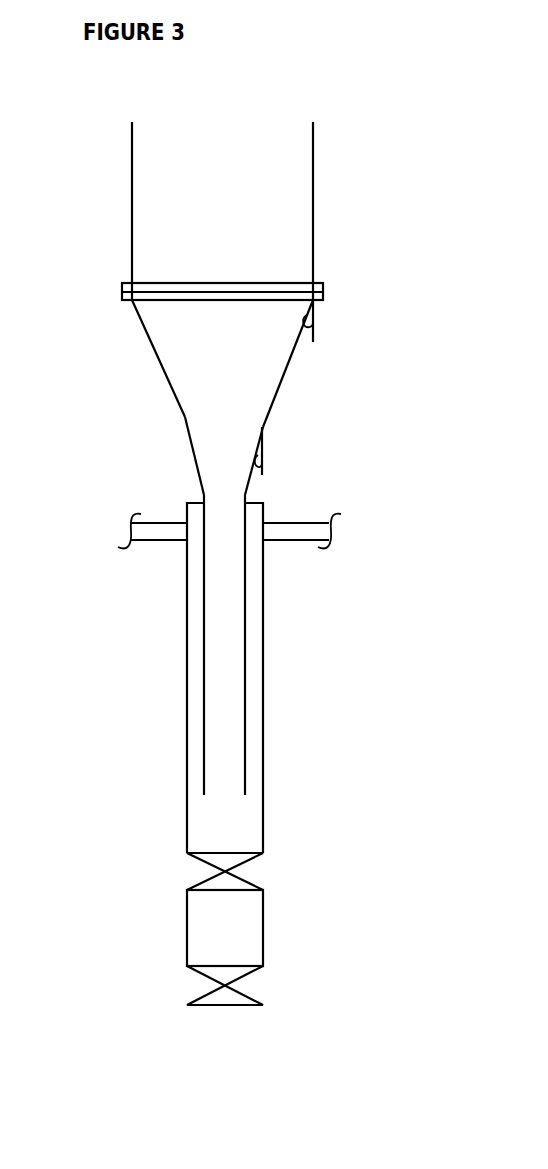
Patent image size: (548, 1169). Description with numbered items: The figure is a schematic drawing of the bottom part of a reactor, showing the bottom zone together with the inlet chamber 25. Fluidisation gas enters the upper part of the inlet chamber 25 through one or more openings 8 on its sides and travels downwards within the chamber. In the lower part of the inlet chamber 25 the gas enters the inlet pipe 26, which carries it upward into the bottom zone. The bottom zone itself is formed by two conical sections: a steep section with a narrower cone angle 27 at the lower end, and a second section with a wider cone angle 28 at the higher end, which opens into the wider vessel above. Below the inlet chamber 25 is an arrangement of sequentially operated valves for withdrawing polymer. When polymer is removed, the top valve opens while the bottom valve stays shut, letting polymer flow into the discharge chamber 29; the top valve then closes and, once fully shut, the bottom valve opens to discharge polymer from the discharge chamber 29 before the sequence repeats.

The wider cone angle conical section 28 is at (253, 375).
The narrower cone angle conical section 27 is at (233, 458).
The inlet pipe 26 is at (232, 652).
The inlet chamber 25 is at (250, 733).
The openings 8 is at (152, 533).
The discharge chamber 29 is at (250, 925).